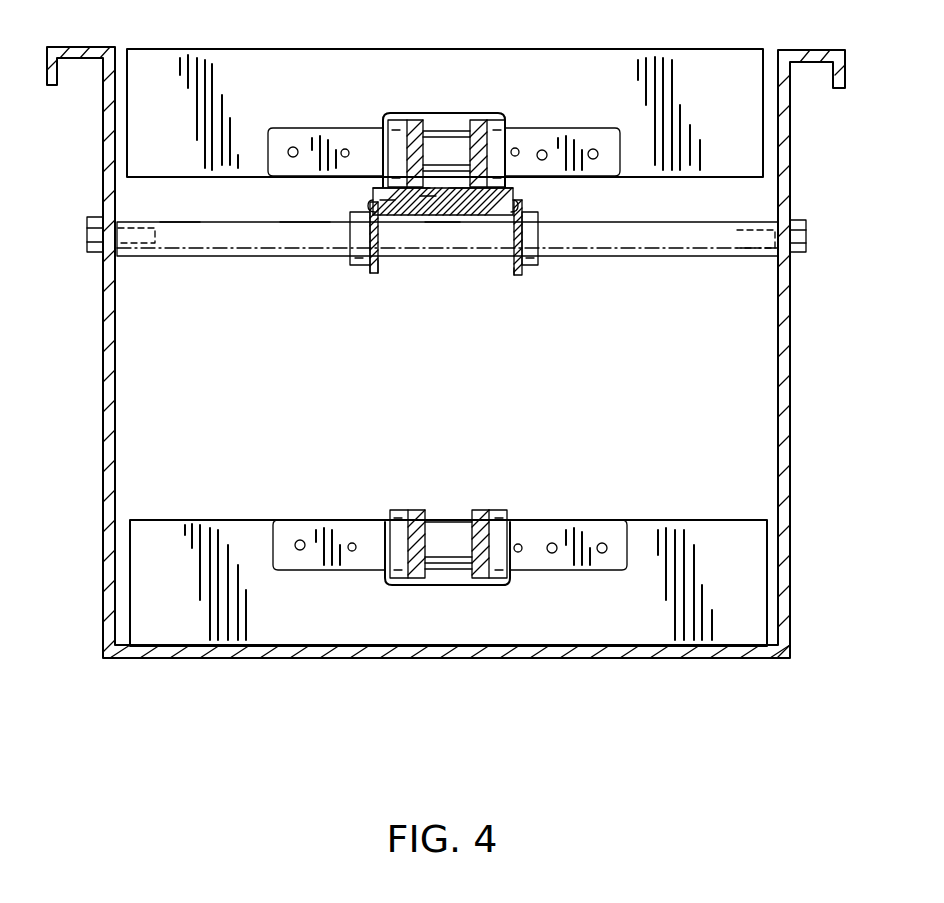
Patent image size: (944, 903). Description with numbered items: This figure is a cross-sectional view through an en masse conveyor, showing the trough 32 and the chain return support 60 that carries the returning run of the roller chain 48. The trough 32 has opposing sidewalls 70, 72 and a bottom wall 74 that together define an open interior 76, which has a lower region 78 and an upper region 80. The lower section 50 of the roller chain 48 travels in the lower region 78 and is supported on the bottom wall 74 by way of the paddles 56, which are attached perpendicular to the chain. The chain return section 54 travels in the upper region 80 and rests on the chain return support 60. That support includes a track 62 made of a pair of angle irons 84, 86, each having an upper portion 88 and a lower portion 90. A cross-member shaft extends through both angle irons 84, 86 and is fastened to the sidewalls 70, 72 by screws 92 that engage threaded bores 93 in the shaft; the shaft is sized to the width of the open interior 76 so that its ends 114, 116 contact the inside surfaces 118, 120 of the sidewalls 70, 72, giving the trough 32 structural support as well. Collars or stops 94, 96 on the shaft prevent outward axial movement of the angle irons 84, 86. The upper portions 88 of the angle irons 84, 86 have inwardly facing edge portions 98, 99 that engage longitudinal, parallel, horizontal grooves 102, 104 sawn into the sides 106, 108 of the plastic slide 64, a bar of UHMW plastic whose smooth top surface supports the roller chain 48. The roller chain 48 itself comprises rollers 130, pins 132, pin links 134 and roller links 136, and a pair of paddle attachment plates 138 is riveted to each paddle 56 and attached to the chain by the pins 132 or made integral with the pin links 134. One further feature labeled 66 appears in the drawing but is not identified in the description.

The trough 32 is at (103, 118).
The roller chain 48 is at (462, 130).
The lower section of the roller chain 50 is at (448, 532).
The chain return section 54 is at (480, 116).
The paddles 56 is at (595, 75).
The chain return support 60 is at (652, 257).
The track 62 is at (340, 230).
The plastic slide 64 is at (433, 232).
The shaft end portion 66 is at (182, 221).
The sidewall 70 is at (103, 465).
The sidewall 72 is at (790, 448).
The bottom wall 74 is at (503, 652).
The open interior 76 is at (758, 350).
The lower region 78 is at (732, 513).
The upper region 80 is at (732, 198).
The angle iron 84 is at (368, 273).
The angle iron 86 is at (520, 277).
The upper portion 88 is at (370, 205).
The lower portion 90 is at (370, 270).
The screws 92 is at (87, 232).
The threaded bores 93 is at (130, 222).
The collar or stop 94 is at (352, 245).
The collar or stop 96 is at (540, 262).
The edge portion 98 is at (385, 200).
The edge portion 99 is at (428, 203).
The groove 102 is at (385, 268).
The groove 104 is at (500, 203).
The side of the plastic slide 106 is at (375, 192).
The side of the plastic slide 108 is at (513, 190).
The end of the shaft 114 is at (115, 258).
The end of the shaft 116 is at (760, 222).
The inside surface 118 is at (116, 267).
The inside surface 120 is at (778, 300).
The rollers 130 is at (437, 133).
The pins 132 is at (385, 140).
The pin links 134 is at (396, 120).
The roller links 136 is at (418, 125).
The paddle attachment plates 138 is at (376, 135).